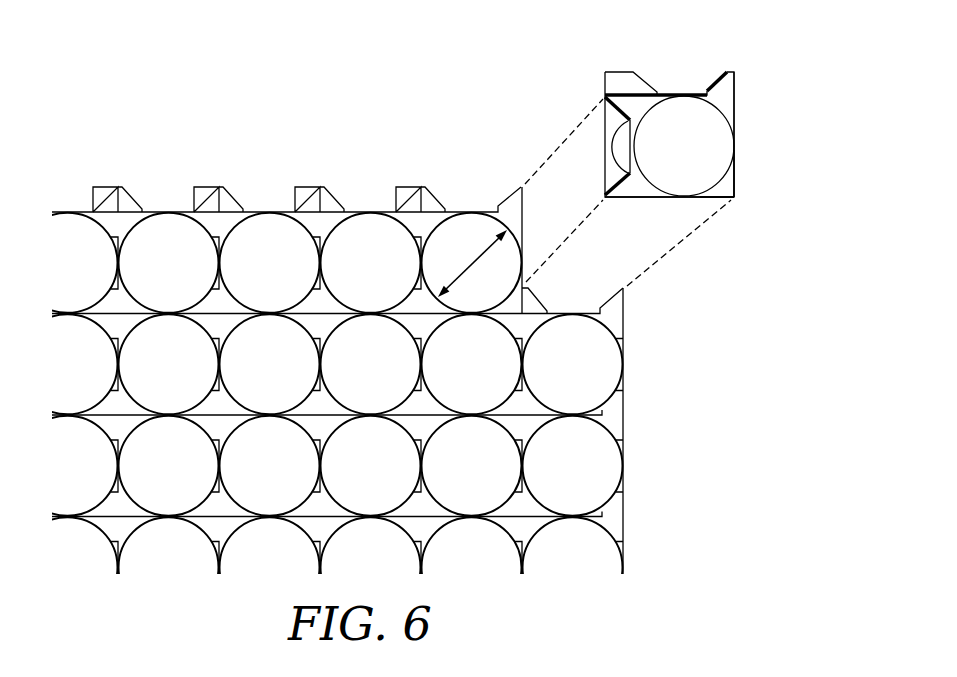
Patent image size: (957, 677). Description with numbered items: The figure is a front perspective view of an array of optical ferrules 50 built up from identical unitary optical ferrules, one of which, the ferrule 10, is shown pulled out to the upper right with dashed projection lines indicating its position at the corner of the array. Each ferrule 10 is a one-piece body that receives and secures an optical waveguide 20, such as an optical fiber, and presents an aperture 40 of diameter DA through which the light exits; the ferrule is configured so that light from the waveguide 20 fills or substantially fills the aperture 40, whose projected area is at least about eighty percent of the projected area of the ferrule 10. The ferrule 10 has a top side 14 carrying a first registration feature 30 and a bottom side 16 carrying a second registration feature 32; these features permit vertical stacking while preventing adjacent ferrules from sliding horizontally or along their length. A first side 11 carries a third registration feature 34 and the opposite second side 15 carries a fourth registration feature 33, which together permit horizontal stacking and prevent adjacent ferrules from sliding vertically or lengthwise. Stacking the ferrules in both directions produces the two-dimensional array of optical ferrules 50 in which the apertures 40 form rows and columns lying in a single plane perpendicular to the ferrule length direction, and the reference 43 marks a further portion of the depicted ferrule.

The array of optical ferrules 50 is at (153, 172).
The unitary optical ferrule 10 is at (762, 80).
The first side 11 is at (735, 145).
The top side 14 is at (687, 96).
The second side 15 is at (667, 110).
The bottom side 16 is at (677, 197).
The optical waveguide 20 is at (623, 155).
The first registration feature 30 is at (727, 80).
The second registration feature 32 is at (620, 192).
The fourth registration feature 33 is at (620, 80).
The third registration feature 34 is at (735, 190).
The aperture 40 is at (697, 158).
The cell opening 43 is at (715, 182).